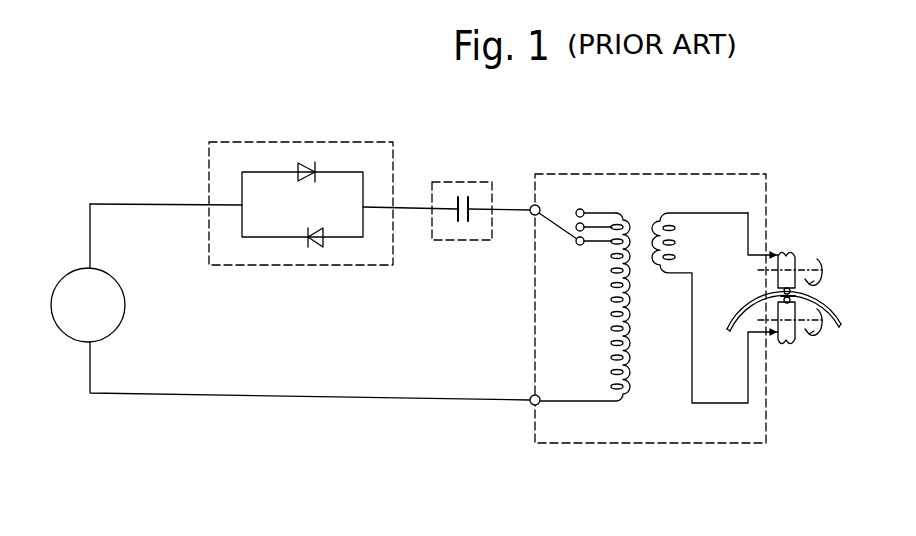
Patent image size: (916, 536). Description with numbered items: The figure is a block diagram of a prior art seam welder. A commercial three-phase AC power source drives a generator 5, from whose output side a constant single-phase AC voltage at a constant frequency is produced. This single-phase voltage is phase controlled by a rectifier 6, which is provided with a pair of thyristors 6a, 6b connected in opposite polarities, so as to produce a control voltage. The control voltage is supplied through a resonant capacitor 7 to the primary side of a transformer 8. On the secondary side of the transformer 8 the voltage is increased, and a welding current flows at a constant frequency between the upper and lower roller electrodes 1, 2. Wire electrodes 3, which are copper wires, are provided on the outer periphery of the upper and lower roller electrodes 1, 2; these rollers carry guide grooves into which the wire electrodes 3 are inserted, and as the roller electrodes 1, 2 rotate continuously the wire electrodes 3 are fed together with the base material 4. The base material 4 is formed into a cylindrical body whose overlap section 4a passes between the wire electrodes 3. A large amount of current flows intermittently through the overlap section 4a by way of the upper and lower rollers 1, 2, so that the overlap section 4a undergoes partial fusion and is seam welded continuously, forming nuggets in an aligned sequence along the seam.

The upper roller electrode 1 is at (798, 255).
The lower roller electrode 2 is at (792, 342).
The wire electrodes 3 is at (792, 295).
The base material 4 is at (731, 321).
The overlap section 4a is at (800, 297).
The generator 5 is at (72, 282).
The rectifier 6 is at (333, 160).
The thyristor 6a is at (308, 162).
The thyristor 6b is at (323, 243).
The resonant capacitor 7 is at (460, 185).
The transformer 8 is at (652, 440).